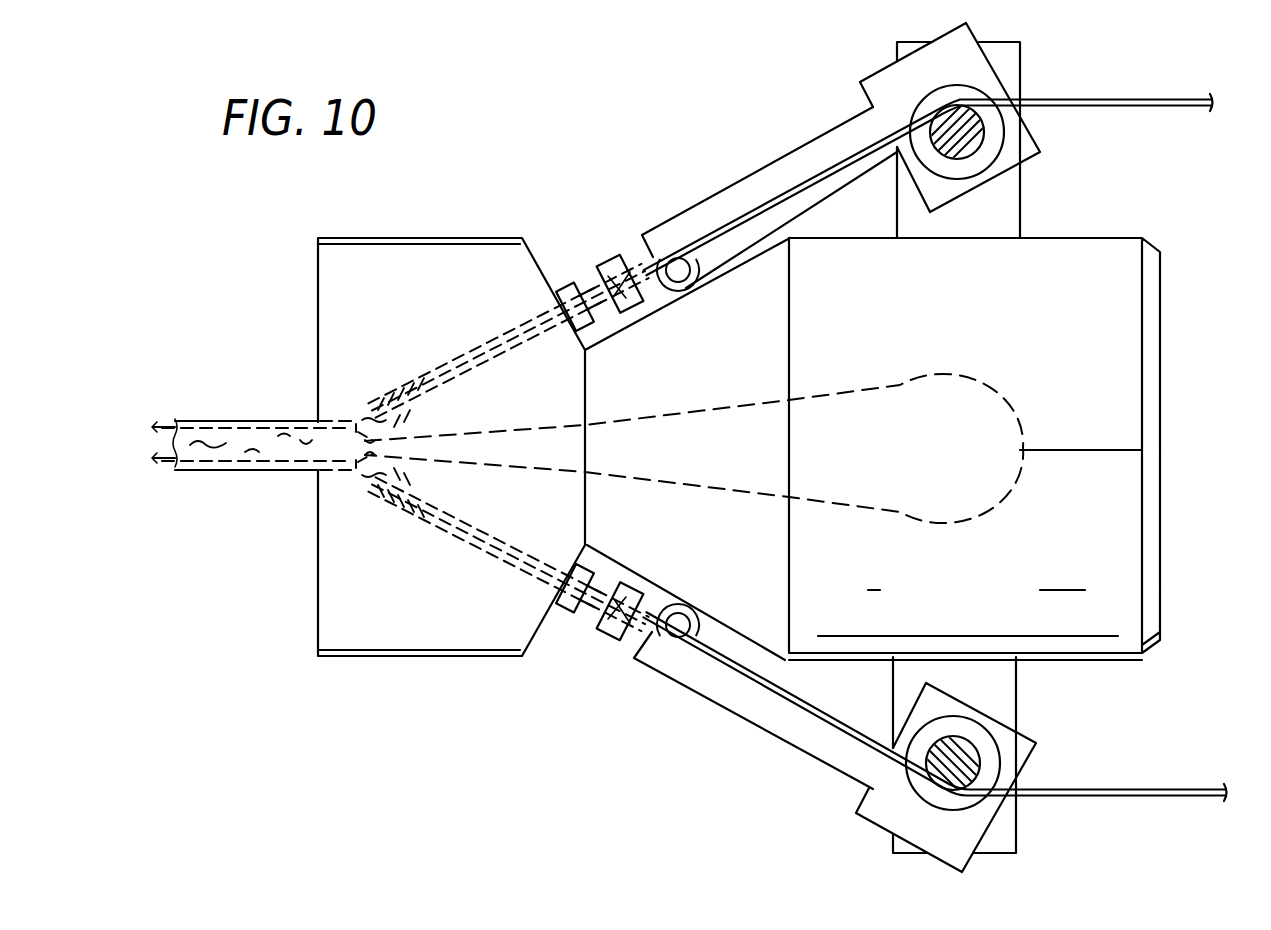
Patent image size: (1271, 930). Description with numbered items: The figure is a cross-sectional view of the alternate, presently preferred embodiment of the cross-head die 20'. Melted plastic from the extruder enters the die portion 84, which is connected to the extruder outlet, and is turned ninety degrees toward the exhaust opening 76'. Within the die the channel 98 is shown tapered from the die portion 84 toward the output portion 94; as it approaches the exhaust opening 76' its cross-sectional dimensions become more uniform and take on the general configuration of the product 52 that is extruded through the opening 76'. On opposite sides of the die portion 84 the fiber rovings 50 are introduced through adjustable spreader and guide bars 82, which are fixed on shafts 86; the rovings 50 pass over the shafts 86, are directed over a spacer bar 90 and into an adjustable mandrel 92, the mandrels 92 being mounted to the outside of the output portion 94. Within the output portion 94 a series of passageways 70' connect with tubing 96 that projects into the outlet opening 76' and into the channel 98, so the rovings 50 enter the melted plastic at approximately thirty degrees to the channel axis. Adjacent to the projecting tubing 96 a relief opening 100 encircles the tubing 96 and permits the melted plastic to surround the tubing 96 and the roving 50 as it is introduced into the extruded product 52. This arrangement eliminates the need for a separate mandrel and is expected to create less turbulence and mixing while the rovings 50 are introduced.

The cross-head die 20' is at (796, 447).
The fiber rovings 50 is at (1078, 90).
The product 52 is at (198, 430).
The passageways 70' is at (508, 442).
The outlet opening 76' is at (270, 480).
The adjustable spreader and guide bars 82 is at (769, 166).
The die portion 84 is at (1165, 345).
The shafts 86 is at (962, 128).
The spacer bar 90 is at (694, 283).
The adjustable mandrel 92 is at (621, 240).
The output portion 94 is at (414, 660).
The tubing 96 is at (417, 383).
The channel 98 is at (880, 483).
The relief opening 100 is at (370, 405).